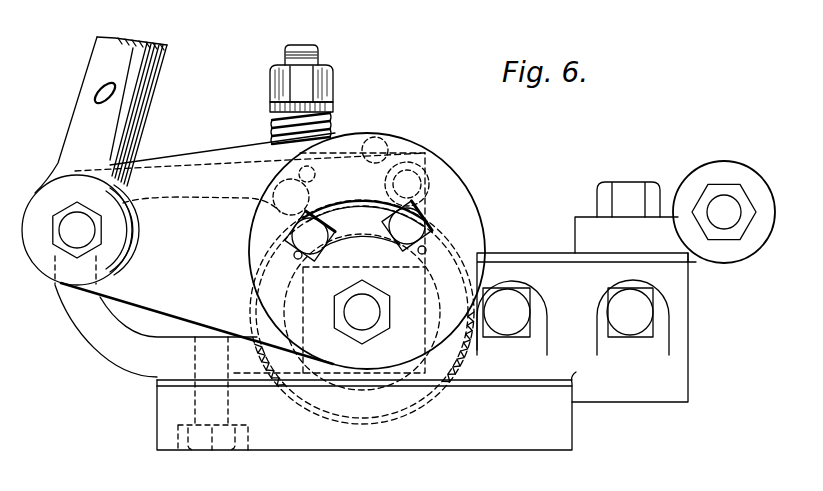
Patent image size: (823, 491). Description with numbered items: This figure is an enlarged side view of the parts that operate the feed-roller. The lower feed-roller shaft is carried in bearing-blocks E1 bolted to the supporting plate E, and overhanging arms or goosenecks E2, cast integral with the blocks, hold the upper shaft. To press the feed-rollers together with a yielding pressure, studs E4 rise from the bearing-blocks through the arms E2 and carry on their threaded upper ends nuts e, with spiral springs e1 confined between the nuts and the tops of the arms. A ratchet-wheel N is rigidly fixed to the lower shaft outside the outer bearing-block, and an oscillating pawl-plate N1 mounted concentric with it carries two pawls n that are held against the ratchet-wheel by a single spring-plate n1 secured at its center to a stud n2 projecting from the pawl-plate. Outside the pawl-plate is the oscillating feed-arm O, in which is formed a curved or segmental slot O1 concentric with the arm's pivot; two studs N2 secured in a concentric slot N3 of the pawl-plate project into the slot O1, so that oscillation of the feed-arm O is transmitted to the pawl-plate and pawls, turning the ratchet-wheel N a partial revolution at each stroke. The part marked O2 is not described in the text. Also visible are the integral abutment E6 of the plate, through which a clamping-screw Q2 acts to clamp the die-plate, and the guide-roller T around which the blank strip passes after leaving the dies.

The lever arm O2 is at (94, 161).
The oscillating feed-arm O is at (313, 259).
The curved or segmental slot O1 is at (492, 227).
The ratchet-wheel N is at (462, 368).
The oscillating pawl-plate N1 is at (468, 198).
The studs N2 is at (358, 231).
The concentric slot N3 is at (365, 224).
The pawls n is at (351, 188).
The spring-plate n1 is at (372, 150).
The stud n2 is at (413, 164).
The nuts e is at (333, 78).
The spiral springs e1 is at (333, 120).
The studs E4 is at (318, 52).
The overhanging arms or goosenecks E2 is at (425, 158).
The plate E is at (366, 411).
The bearing-blocks E1 is at (213, 393).
The integral abutment E6 is at (582, 327).
The clamping-screw Q2 is at (573, 317).
The guide-roller T is at (739, 178).